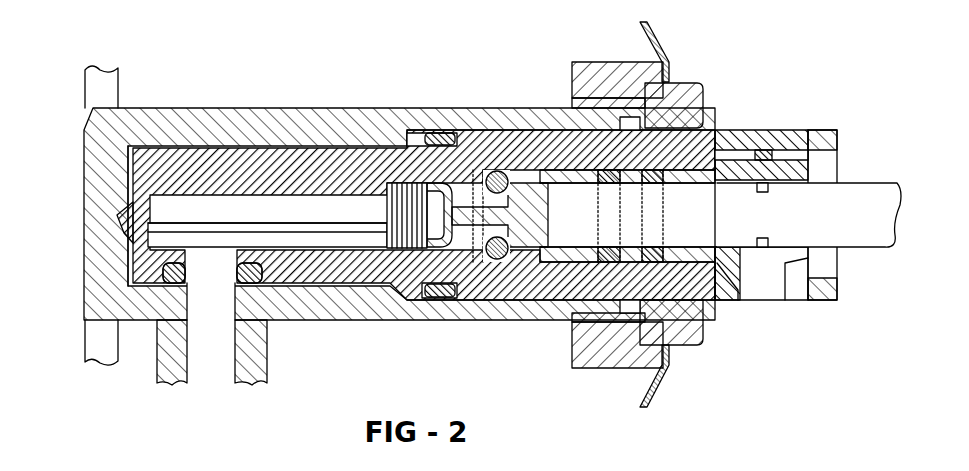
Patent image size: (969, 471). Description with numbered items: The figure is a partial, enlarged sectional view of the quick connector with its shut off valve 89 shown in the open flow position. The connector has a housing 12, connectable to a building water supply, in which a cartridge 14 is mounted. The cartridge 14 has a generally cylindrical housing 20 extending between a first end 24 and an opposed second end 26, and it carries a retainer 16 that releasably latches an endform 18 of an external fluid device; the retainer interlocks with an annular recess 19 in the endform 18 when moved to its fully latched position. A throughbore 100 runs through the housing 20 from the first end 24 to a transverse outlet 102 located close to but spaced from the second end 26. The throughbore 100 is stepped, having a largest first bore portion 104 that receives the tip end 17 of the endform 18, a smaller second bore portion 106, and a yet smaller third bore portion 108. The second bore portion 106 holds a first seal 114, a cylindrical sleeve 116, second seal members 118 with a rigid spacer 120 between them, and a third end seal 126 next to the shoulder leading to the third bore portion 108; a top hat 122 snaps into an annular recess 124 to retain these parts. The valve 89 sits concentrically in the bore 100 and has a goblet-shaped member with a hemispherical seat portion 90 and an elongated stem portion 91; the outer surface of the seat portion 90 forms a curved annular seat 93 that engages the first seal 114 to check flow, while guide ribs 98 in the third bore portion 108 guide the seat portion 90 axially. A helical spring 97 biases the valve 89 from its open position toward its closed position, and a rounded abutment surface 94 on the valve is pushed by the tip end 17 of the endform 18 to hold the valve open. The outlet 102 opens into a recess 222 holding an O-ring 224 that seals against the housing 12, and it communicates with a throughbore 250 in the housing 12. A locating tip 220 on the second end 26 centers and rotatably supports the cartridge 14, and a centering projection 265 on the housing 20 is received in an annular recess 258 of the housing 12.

The housing 12 is at (90, 290).
The cartridge 14 is at (207, 150).
The retainer 16 is at (805, 128).
The tip end 17 is at (550, 247).
The endform 18 is at (855, 228).
The annular recess 19 is at (762, 247).
The housing 20 is at (287, 147).
The first end 24 is at (838, 140).
The second end 26 is at (133, 164).
The shut off valve 89 is at (478, 255).
The seat portion 90 is at (432, 297).
The stem portion 91 is at (549, 246).
The annular seat 93 is at (440, 132).
The abutment surface 94 is at (548, 217).
The spring 97 is at (408, 182).
The guide ribs 98 is at (334, 224).
The throughbore 100 is at (300, 228).
The outlet 102 is at (267, 322).
The first bore portion 104 is at (717, 297).
The second bore portion 106 is at (560, 268).
The third bore portion 108 is at (445, 250).
The first seal 114 is at (490, 170).
The cylindrical sleeve 116 is at (530, 130).
The second seal members 118 is at (655, 168).
The rigid spacer 120 is at (621, 307).
The top hat 122 is at (716, 300).
The annular recess 124 is at (683, 183).
The third end seal 126 is at (462, 185).
The locating tip 220 is at (115, 233).
The recess 222 is at (178, 284).
The O-ring 224 is at (222, 262).
The throughbore 250 is at (197, 373).
The annular recess 258 is at (613, 308).
The centering projection 265 is at (641, 308).